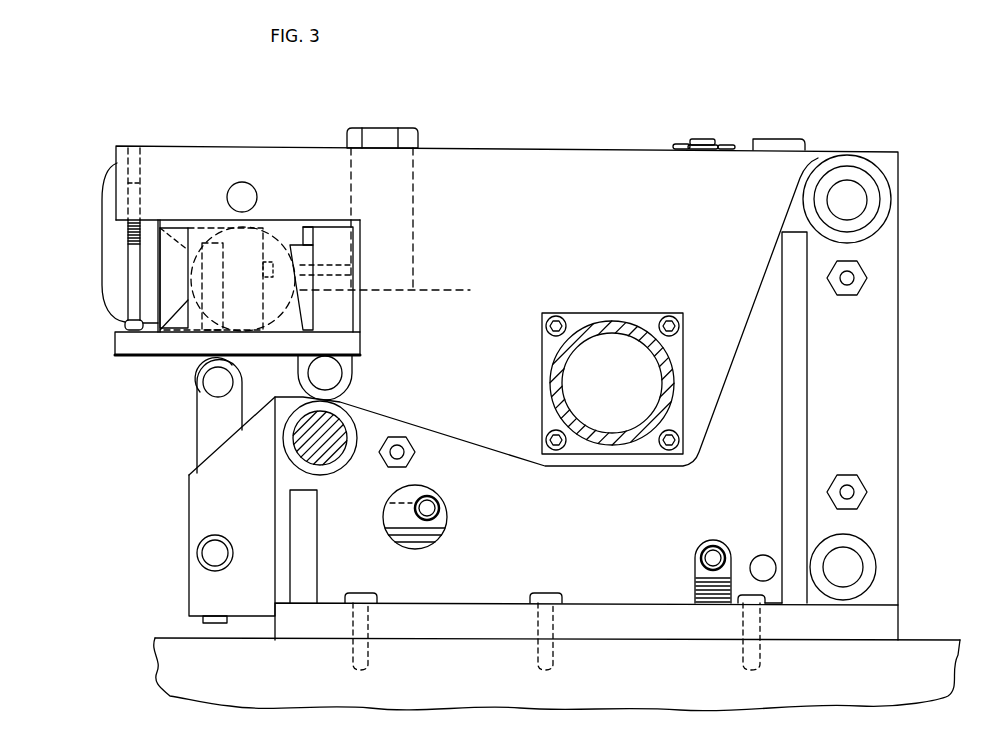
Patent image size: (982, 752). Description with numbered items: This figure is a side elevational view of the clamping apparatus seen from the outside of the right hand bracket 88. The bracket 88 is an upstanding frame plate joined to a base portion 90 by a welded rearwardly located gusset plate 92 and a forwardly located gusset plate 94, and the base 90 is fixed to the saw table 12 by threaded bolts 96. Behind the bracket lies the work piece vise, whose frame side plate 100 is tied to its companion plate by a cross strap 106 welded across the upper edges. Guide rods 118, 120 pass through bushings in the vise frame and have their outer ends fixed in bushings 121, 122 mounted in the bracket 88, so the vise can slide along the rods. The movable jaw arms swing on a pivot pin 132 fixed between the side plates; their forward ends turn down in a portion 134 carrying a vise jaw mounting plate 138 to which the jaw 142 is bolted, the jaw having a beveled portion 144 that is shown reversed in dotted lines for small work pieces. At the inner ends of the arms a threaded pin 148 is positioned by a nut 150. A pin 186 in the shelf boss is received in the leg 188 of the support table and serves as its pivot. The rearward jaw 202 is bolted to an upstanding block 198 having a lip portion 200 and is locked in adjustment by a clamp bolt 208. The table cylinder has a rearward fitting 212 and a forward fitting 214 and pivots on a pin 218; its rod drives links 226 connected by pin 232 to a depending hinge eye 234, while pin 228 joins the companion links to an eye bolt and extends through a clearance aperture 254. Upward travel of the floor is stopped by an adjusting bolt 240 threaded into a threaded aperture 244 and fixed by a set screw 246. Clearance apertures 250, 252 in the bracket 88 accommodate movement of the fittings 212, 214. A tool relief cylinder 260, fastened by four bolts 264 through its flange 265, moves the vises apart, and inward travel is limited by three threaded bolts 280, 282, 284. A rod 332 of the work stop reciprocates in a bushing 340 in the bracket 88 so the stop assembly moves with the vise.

The saw table 12 is at (486, 669).
The right hand bracket 88 is at (632, 504).
The base portion 90 is at (666, 632).
The rearwardly located gusset plate 92 is at (803, 433).
The forwardly located gusset plate 94 is at (306, 557).
The threaded bolts 96 is at (370, 597).
The vise frame side plate 100 is at (577, 273).
The cross strap 106 is at (787, 141).
The guide rod 118 is at (852, 213).
The guide rod 120 is at (829, 577).
The bushing 121 is at (872, 190).
The bushing 122 is at (878, 564).
The pivot pin 132 is at (255, 192).
The downwardly extending arm portion 134 is at (112, 256).
The vise jaw mounting plate 138 is at (148, 274).
The jaw 142 is at (189, 286).
The beveled portion 144 is at (189, 309).
The threaded pin 148 is at (712, 140).
The nut 150 is at (675, 143).
The pin 186 is at (342, 373).
The leg 188 is at (362, 354).
The upstanding block 198 is at (317, 322).
The lip portion 200 is at (308, 236).
The rearward jaw 202 is at (309, 252).
The clamp bolt 208 is at (386, 134).
The rearward cylinder fitting 212 is at (700, 563).
The forward cylinder fitting 214 is at (439, 509).
The pivot pin 218 is at (771, 578).
The links 226 is at (206, 424).
The pin 228 is at (207, 553).
The pin 232 is at (208, 390).
The depending hinge eye 234 is at (196, 374).
The adjusting bolt 240 is at (128, 318).
The threaded aperture 244 is at (141, 207).
The set screw 246 is at (140, 165).
The clearance aperture 250 is at (733, 566).
The clearance aperture 252 is at (384, 521).
The clearance aperture 254 is at (223, 572).
The tool relief cylinder 260 is at (597, 396).
The bolts 264 is at (671, 322).
The flange 265 is at (545, 417).
The threaded bolt 280 is at (849, 492).
The threaded bolt 282 is at (847, 286).
The threaded bolt 284 is at (406, 452).
The rod 332 is at (336, 445).
The bushing 340 is at (348, 461).